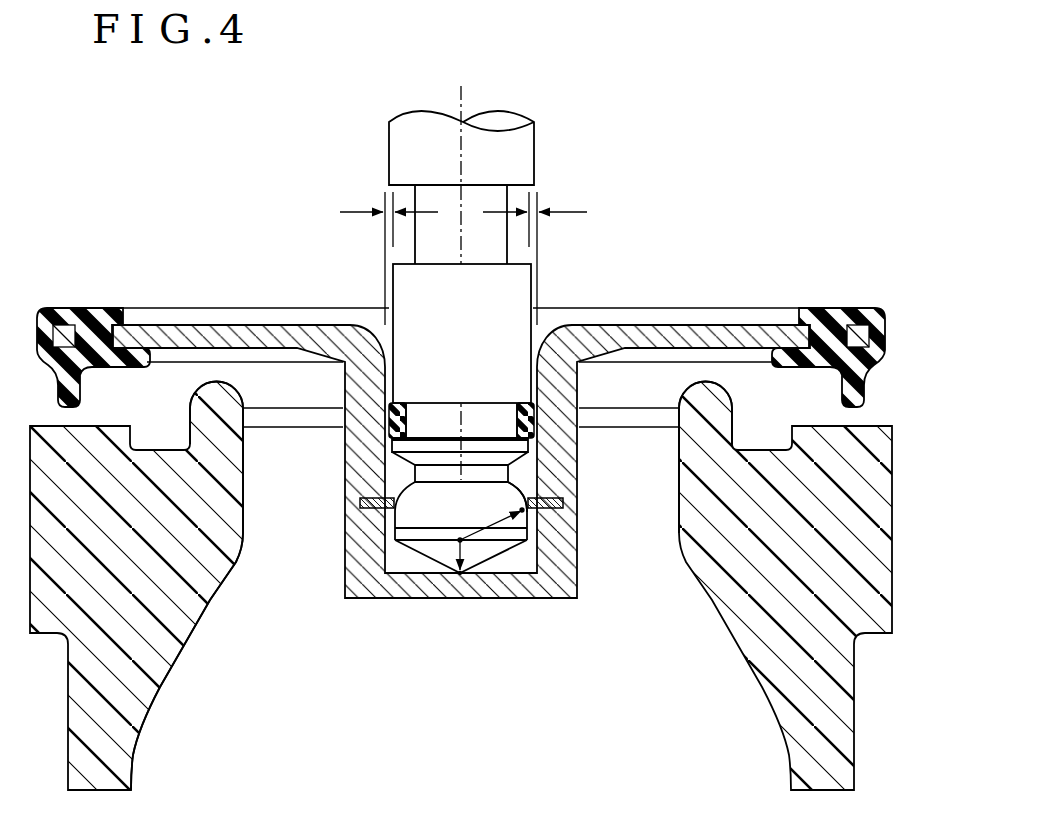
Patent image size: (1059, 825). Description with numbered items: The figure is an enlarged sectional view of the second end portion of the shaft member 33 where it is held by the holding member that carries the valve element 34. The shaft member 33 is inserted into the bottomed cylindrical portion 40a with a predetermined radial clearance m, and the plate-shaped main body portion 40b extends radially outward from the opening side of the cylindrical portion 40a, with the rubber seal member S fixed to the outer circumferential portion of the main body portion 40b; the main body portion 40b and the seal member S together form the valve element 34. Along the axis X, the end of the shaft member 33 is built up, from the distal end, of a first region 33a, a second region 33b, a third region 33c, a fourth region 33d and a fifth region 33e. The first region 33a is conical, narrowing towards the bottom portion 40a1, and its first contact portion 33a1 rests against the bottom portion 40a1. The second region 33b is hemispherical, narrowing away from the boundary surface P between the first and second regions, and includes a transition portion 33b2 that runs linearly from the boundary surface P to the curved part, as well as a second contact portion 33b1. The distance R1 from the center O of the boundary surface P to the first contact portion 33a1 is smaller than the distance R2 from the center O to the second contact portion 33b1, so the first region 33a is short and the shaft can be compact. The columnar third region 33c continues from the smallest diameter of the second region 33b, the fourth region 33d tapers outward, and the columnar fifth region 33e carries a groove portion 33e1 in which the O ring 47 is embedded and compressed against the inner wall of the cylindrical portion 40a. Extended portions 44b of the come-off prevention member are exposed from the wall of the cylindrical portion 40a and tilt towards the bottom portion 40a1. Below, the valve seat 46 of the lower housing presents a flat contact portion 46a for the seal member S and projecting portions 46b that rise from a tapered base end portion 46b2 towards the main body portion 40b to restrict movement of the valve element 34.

The shaft member 33 is at (545, 136).
The fifth region 33e is at (522, 292).
The groove portion 33e1 is at (436, 420).
The second region 33b is at (483, 468).
The third region 33c is at (417, 474).
The fourth region 33d is at (545, 465).
The second contact portion 33b1 is at (563, 501).
The transition portion 33b2 is at (540, 541).
The first region 33a is at (535, 582).
The first contact portion 33a1 is at (462, 577).
The valve element 34 is at (657, 287).
The cylindrical portion 40a is at (344, 455).
The bottom portion 40a1 is at (397, 590).
The main body portion 40b is at (152, 326).
The extended portions 44b is at (357, 548).
The valve seat 46 is at (84, 455).
The contact portion 46a is at (845, 417).
The projecting portion 46b is at (216, 395).
The base end portion 46b2 is at (162, 680).
The O ring 47 is at (524, 403).
The seal member S is at (55, 306).
The axis X is at (461, 270).
The clearance m is at (463, 199).
The center of the boundary surface O is at (458, 538).
The boundary surface P is at (458, 574).
The distance from center O to first contact portion R1 is at (457, 563).
The distance from center O to second contact portion R2 is at (502, 520).